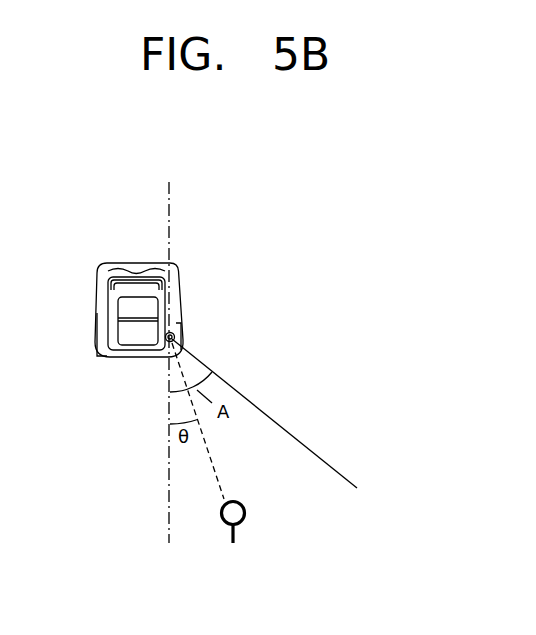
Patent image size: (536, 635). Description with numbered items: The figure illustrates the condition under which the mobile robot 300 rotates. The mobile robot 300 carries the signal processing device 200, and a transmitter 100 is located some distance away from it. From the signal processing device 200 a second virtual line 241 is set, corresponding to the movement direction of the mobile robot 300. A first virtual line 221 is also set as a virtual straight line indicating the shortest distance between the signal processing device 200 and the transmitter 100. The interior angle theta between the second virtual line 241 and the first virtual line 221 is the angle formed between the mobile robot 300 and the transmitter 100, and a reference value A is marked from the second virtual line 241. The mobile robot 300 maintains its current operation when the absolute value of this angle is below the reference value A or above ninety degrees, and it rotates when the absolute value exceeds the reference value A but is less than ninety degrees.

The second virtual line 241 is at (169, 221).
The mobile robot 300 is at (176, 290).
The signal processing device 200 is at (174, 336).
The first virtual line 221 is at (217, 475).
The transmitter 100 is at (246, 513).